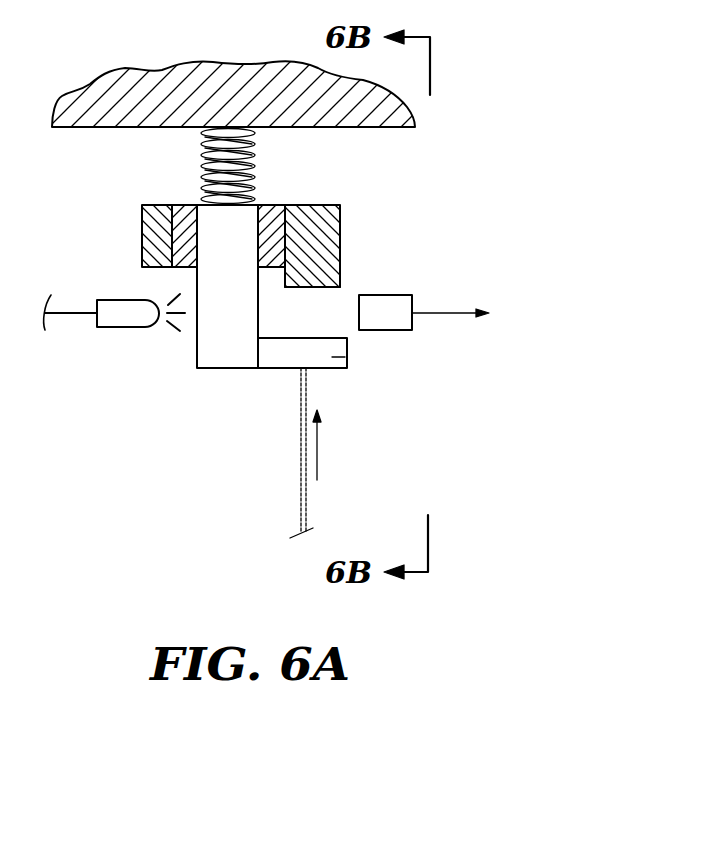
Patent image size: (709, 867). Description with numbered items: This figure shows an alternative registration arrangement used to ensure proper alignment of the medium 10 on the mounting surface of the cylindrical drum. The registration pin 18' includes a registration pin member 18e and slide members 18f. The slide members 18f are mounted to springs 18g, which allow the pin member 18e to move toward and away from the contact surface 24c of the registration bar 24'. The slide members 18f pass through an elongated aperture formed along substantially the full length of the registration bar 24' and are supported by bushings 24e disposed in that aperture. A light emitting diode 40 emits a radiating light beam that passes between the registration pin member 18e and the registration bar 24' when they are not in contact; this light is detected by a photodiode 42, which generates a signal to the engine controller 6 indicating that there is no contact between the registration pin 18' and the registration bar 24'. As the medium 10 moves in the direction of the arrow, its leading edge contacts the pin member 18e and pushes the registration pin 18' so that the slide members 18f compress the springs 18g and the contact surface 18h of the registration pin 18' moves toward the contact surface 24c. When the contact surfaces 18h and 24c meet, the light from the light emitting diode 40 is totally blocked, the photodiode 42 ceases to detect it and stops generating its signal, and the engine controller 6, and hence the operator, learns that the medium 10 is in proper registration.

The medium 10 is at (300, 484).
The springs 18g is at (236, 165).
The slide members 18f is at (208, 350).
The contact surface 18h is at (321, 338).
The registration pin member 18e is at (345, 357).
The registration pin 18' is at (370, 409).
The bushings 24e is at (179, 218).
The registration bar 24' is at (340, 232).
The contact surface 24c is at (318, 293).
The light emitting diode 40 is at (117, 312).
The photodiode 42 is at (394, 310).
The engine controller 6 is at (555, 314).